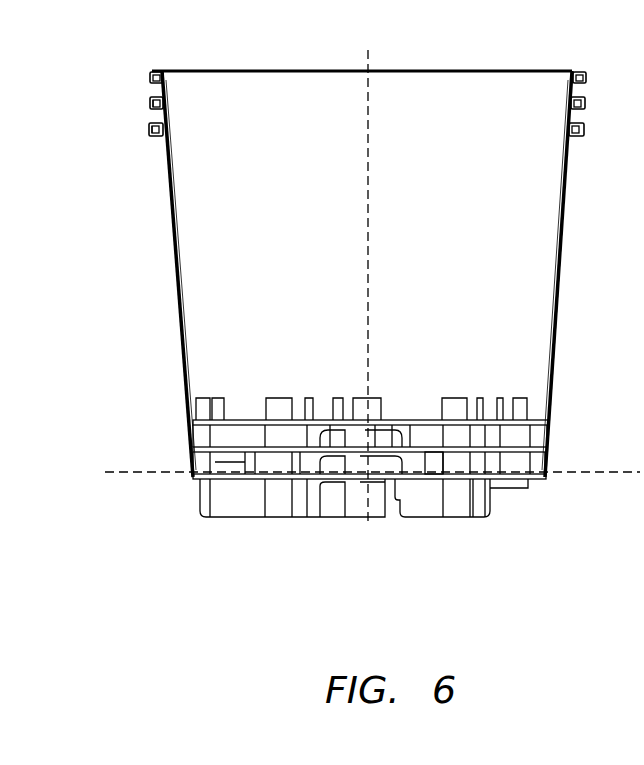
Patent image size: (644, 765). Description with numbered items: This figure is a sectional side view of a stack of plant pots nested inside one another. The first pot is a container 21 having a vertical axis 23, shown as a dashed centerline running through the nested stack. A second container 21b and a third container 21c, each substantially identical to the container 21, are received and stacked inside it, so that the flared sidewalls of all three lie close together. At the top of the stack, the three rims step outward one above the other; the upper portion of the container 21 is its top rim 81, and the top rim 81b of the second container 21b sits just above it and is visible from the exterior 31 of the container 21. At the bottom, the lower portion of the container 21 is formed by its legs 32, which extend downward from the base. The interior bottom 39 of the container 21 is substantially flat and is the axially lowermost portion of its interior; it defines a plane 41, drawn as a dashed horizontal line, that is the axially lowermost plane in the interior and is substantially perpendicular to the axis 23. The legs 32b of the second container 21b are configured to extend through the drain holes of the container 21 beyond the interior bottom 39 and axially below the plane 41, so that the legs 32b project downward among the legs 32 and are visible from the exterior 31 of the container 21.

The container 21 is at (133, 129).
The second container 21b is at (133, 101).
The third container 21c is at (133, 73).
The top rim 81 is at (150, 134).
The top rim of second container 81b is at (150, 106).
The axis 23 is at (370, 250).
The exterior 31 is at (561, 272).
The interior bottom 39 is at (438, 468).
The plane 41 is at (580, 472).
The legs 32 is at (458, 505).
The legs of second container 32b is at (506, 485).